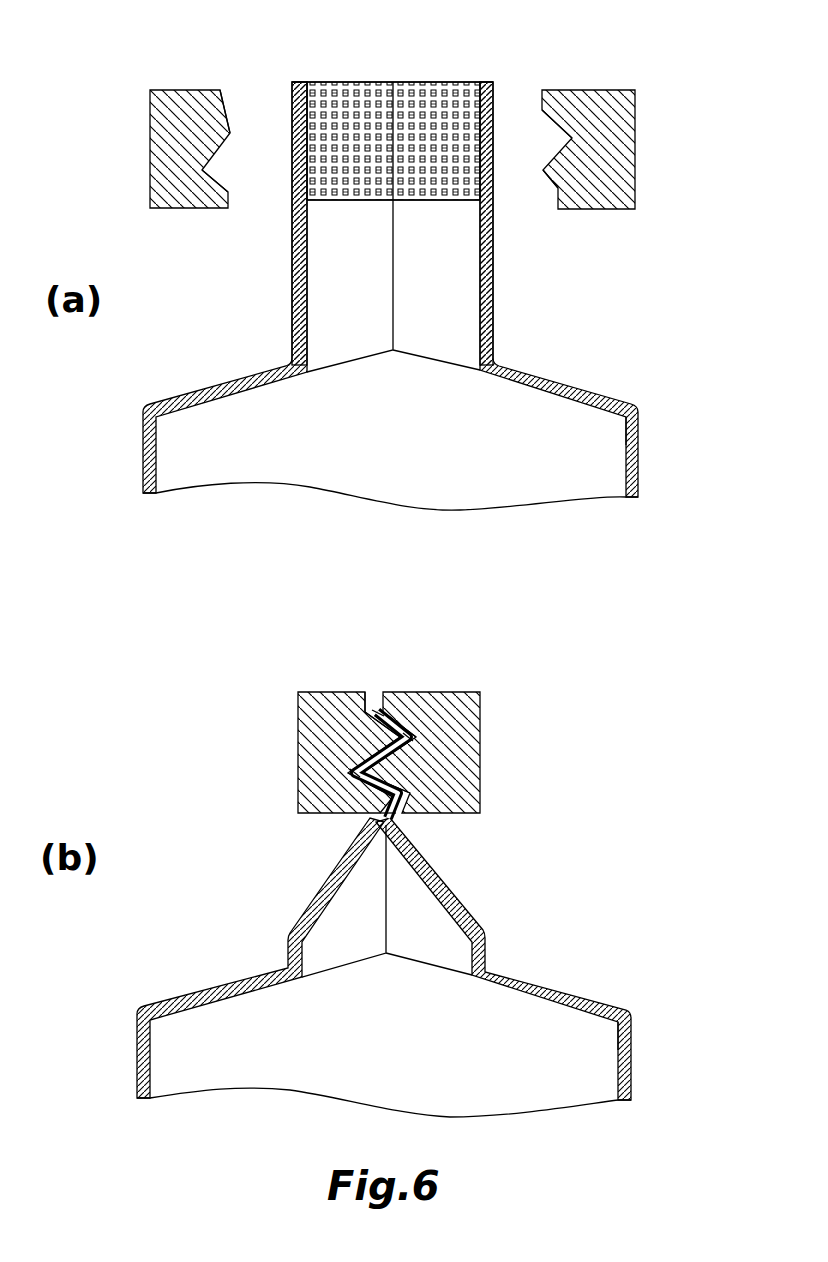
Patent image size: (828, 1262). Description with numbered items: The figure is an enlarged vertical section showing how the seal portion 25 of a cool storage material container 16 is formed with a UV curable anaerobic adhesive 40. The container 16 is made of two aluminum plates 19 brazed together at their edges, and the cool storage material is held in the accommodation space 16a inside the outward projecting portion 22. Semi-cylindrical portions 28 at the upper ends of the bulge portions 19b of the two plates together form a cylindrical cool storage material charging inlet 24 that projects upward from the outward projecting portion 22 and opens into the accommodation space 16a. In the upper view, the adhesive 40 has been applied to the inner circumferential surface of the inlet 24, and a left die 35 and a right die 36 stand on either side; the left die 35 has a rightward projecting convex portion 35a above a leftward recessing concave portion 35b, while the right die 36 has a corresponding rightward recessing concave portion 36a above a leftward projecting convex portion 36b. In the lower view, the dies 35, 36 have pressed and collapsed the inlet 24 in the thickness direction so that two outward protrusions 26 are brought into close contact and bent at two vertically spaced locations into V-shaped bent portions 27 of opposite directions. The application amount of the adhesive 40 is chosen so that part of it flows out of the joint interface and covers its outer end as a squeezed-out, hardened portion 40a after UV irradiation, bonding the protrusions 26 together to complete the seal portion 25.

The cool storage material container 16 is at (393, 622).
The cool storage material accommodation space 16a is at (626, 432).
The aluminum plate 19 is at (150, 497).
The bulge portion 19b is at (143, 435).
The outward projecting portion 22 is at (638, 490).
The cool storage material charging inlet 24 is at (415, 382).
The seal portion 25 is at (389, 738).
The outward protrusion 26 is at (368, 812).
The bent portion 27 is at (378, 770).
The semi-cylindrical portion 28 is at (298, 82).
The left die 35 is at (228, 437).
The convex portion 35a is at (229, 131).
The concave portion 35b is at (228, 192).
The right die 36 is at (545, 439).
The concave portion 36a is at (550, 128).
The convex portion 36b is at (545, 185).
The UV curable anaerobic adhesive 40 is at (405, 98).
The squeezed-out hardened portion 40a is at (377, 710).